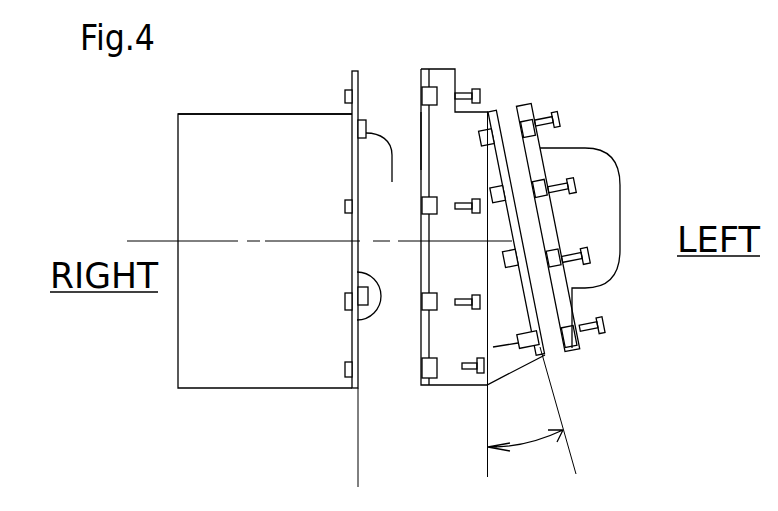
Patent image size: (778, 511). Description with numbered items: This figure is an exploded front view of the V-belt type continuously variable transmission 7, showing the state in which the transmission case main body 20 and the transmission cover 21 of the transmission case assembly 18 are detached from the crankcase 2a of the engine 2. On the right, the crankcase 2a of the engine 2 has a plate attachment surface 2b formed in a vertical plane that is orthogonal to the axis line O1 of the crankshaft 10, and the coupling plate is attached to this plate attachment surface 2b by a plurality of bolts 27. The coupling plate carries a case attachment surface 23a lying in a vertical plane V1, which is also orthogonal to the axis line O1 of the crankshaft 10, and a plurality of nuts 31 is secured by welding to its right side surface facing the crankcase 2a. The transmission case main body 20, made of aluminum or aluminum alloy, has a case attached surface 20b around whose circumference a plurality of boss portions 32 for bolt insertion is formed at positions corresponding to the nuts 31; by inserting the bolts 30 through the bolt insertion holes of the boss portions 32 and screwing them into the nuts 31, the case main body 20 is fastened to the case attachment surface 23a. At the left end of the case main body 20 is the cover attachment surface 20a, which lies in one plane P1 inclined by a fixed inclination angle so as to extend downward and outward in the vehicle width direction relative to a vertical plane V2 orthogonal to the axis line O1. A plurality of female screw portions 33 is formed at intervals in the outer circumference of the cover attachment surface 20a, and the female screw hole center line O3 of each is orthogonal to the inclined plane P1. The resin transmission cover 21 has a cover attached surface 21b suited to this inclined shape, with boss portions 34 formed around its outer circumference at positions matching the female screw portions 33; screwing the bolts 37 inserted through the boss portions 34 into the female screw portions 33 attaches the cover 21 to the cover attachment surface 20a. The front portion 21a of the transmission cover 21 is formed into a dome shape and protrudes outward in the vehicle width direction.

The engine 2 is at (140, 172).
The crankcase 2a is at (216, 163).
The plate attachment surface 2b is at (352, 165).
The V-belt type continuously variable transmission 7 is at (512, 221).
The crankshaft 10 is at (280, 208).
The transmission case assembly 18 is at (512, 221).
The transmission case main body 20 is at (445, 98).
The cover attachment surface 20a is at (535, 320).
The case attached surface 20b is at (420, 140).
The transmission cover 21 is at (580, 350).
The front portion 21a is at (592, 200).
The cover attached surface 21b is at (517, 128).
The case attachment surface 23a is at (352, 315).
The bolts 27 is at (382, 170).
The bolts 30 is at (475, 370).
The nuts 31 is at (344, 207).
The boss portions 32 is at (438, 303).
The female screw portions 33 is at (478, 136).
The boss portions 34 is at (537, 183).
The bolts 37 is at (560, 113).
The axis line O1 is at (150, 241).
The female screw hole center line O3 is at (510, 347).
The vertical plane V1 is at (358, 418).
The vertical plane V2 is at (487, 441).
The inclination plane P1 is at (567, 443).